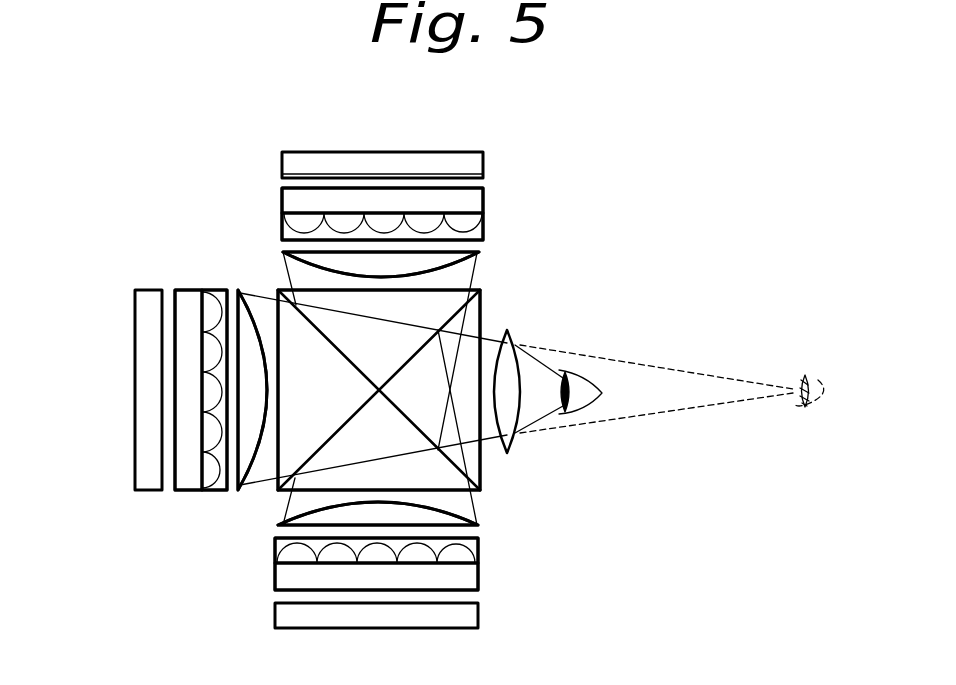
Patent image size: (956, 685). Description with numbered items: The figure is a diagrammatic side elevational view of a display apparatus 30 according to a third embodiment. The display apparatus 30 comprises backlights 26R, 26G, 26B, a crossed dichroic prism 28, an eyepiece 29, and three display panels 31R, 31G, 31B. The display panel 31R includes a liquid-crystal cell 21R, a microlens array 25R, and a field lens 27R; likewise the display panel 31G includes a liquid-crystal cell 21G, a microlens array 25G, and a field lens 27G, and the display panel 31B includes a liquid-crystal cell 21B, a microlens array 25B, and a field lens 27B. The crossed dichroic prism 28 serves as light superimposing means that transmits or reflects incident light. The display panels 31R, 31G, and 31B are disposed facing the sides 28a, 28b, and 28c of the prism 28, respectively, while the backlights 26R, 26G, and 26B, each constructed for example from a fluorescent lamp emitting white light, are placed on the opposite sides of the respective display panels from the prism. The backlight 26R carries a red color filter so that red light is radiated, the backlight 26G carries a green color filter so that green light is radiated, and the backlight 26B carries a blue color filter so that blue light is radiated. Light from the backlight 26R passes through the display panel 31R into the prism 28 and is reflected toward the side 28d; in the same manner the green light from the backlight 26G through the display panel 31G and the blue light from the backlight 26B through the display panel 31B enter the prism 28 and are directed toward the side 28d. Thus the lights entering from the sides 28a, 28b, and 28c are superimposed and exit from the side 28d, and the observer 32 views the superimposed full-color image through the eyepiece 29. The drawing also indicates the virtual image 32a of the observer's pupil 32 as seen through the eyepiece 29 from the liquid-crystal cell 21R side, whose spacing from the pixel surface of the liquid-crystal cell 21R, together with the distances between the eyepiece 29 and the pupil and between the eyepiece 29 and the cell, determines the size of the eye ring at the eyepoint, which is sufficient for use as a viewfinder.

The liquid-crystal cell 21R is at (472, 196).
The microlens array 25R is at (478, 238).
The backlight 26R is at (388, 164).
The field lens 27R is at (462, 258).
The display panel 31R is at (568, 108).
The liquid-crystal cell 21G is at (180, 290).
The microlens array 25G is at (220, 290).
The backlight 26G is at (152, 392).
The field lens 27G is at (252, 290).
The display panel 31G is at (275, 222).
The liquid-crystal cell 21B is at (478, 582).
The microlens array 25B is at (463, 548).
The backlight 26B is at (290, 615).
The field lens 27B is at (474, 519).
The display panel 31B is at (568, 528).
The crossed dichroic prism 28 is at (483, 299).
The side of the prism 28a is at (452, 275).
The side of the prism 28b is at (272, 458).
The side of the prism 28c is at (462, 503).
The side of the prism 28d is at (483, 329).
The eyepiece 29 is at (510, 442).
The display apparatus 30 is at (688, 168).
The observer 32 is at (592, 384).
The virtual image of the observer's pupil 32a is at (818, 380).